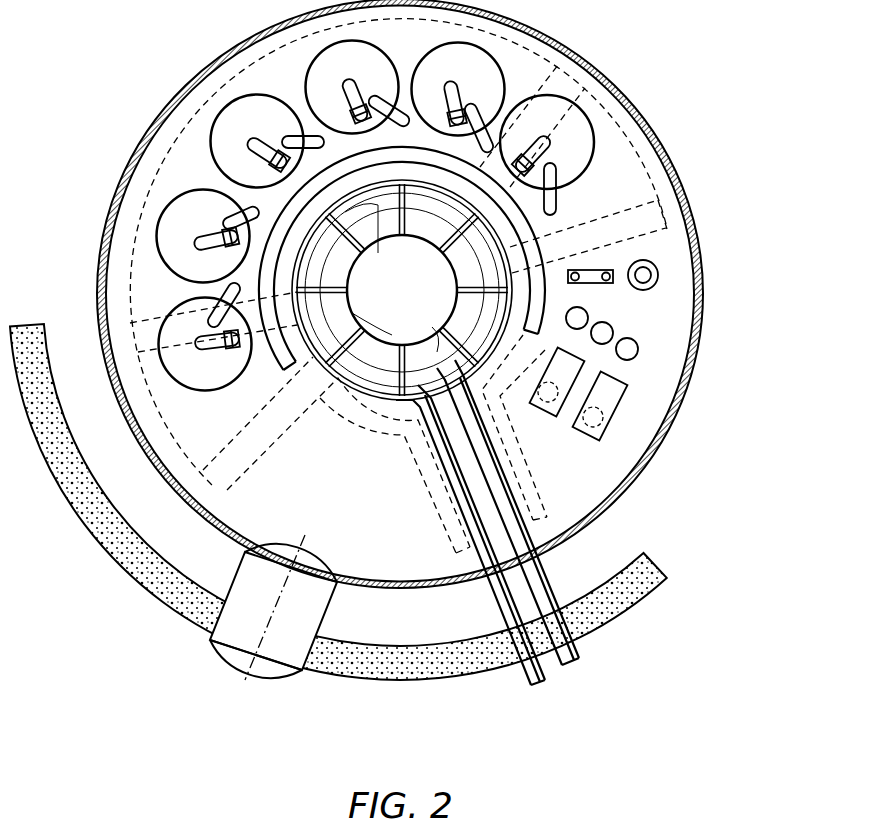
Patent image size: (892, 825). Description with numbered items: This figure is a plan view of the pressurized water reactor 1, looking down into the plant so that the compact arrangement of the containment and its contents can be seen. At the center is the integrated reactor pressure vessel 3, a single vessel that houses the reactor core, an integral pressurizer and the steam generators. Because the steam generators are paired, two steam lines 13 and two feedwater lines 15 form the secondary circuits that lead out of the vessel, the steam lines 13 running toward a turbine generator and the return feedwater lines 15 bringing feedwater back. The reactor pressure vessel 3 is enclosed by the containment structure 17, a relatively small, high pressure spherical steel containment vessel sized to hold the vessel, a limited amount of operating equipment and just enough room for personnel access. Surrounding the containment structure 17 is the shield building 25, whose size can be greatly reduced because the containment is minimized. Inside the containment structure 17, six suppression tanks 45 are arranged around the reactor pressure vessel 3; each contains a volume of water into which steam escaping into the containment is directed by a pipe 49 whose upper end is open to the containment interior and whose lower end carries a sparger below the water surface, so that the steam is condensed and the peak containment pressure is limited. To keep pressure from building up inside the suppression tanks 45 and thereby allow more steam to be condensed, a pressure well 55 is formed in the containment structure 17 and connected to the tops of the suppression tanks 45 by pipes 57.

The pressurized water reactor 1 is at (393, 342).
The integrated reactor pressure vessel 3 is at (284, 370).
The steam line 13 is at (350, 274).
The return feedwater line 15 is at (437, 350).
The containment structure 17 is at (693, 206).
The shield building 25 is at (123, 580).
The suppression tank 45 is at (217, 184).
The pipe 49 is at (256, 165).
The pressure well 55 is at (640, 172).
The pipe 57 is at (312, 137).